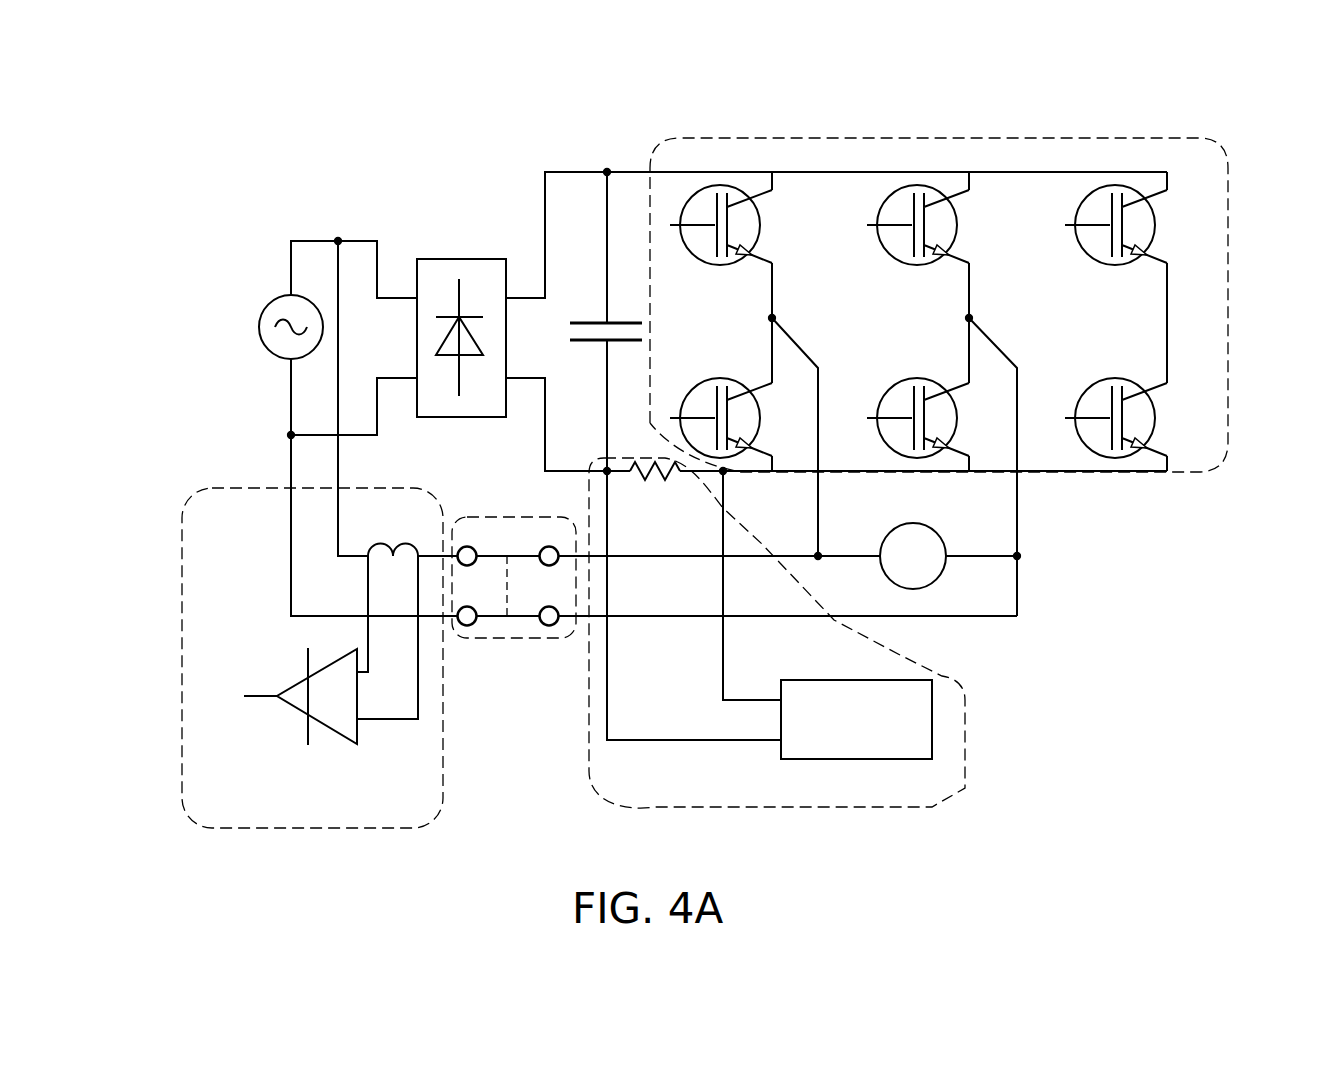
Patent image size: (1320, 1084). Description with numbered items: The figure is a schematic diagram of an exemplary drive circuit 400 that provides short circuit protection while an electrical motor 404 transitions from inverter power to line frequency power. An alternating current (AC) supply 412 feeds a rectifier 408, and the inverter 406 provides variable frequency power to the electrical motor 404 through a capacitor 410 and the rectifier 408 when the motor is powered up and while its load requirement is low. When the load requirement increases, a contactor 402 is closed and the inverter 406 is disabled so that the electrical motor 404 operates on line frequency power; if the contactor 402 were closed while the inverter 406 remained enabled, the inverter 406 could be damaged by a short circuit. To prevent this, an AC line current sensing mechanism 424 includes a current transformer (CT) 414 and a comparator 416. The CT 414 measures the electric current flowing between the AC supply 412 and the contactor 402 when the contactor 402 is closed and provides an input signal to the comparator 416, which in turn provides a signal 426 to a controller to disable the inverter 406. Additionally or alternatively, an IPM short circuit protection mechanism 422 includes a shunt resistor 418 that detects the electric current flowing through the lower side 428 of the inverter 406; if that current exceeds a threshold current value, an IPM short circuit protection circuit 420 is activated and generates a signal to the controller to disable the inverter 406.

The drive circuit 400 is at (384, 155).
The contactor 402 is at (517, 517).
The electrical motor 404 is at (941, 534).
The inverter 406 is at (1130, 138).
The rectifier 408 is at (475, 259).
The capacitor 410 is at (583, 323).
The alternating current (AC) supply 412 is at (273, 298).
The current transformer (CT) 414 is at (367, 547).
The comparator 416 is at (295, 682).
The shunt resistor 418 is at (656, 480).
The IPM short circuit protection circuit 420 is at (932, 727).
The IPM short circuit protection mechanism 422 is at (962, 792).
The AC line current sensing mechanism 424 is at (442, 823).
The signal 426 is at (255, 700).
The lower side of the inverter 428 is at (850, 470).